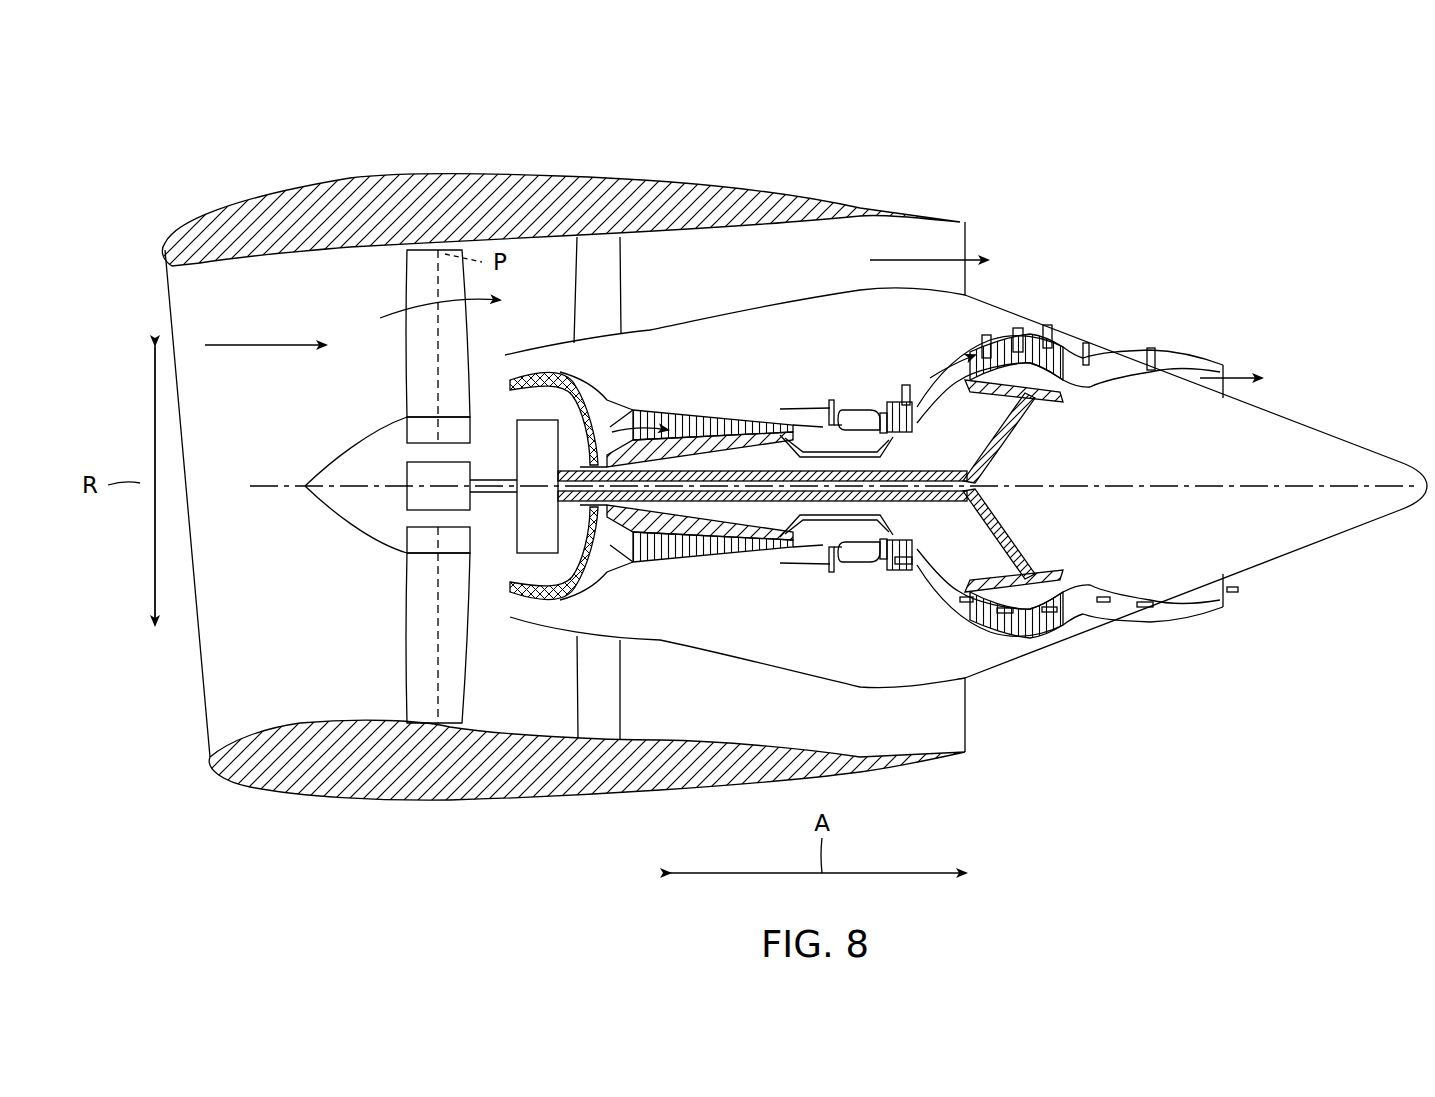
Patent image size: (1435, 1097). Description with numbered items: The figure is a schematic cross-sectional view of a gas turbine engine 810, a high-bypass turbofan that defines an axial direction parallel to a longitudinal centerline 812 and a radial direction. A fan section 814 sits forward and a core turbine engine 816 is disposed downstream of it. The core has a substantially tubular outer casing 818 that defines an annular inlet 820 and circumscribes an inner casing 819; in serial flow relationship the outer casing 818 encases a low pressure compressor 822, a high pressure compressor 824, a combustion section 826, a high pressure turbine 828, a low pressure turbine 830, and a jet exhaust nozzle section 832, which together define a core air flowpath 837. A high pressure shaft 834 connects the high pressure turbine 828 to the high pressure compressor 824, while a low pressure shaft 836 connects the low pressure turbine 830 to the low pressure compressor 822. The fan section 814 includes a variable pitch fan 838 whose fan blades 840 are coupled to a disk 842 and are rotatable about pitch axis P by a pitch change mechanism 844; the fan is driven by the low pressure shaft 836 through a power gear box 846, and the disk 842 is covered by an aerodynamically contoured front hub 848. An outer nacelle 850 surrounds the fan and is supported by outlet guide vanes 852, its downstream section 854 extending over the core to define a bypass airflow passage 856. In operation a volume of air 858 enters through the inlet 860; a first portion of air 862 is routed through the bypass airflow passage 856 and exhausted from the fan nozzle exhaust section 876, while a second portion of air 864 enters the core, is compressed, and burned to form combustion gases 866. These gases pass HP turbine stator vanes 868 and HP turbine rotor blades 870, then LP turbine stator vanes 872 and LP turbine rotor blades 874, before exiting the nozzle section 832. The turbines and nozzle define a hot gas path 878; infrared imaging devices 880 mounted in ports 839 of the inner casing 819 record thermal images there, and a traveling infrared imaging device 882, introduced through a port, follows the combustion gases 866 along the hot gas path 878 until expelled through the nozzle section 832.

The gas turbine engine 810 is at (1178, 122).
The longitudinal centerline 812 is at (1225, 486).
The fan section 814 is at (335, 290).
The core turbine engine 816 is at (802, 352).
The outer casing 818 is at (803, 665).
The inner casing 819 is at (713, 410).
The annular inlet 820 is at (562, 582).
The low pressure compressor 822 is at (510, 605).
The high pressure compressor 824 is at (655, 558).
The combustion section 826 is at (850, 556).
The high pressure turbine 828 is at (920, 568).
The low pressure turbine 830 is at (1042, 625).
The jet exhaust nozzle section 832 is at (1122, 614).
The high pressure shaft 834 is at (900, 452).
The low pressure shaft 836 is at (937, 470).
The core air flowpath 837 is at (593, 575).
The variable pitch fan 838 is at (355, 540).
The ports 839 is at (1048, 330).
The fan blades 840 is at (407, 660).
The disk 842 is at (407, 428).
The pitch change mechanism 844 is at (407, 480).
The power gear box 846 is at (517, 450).
The front hub 848 is at (330, 508).
The outer nacelle 850 is at (455, 800).
The outlet guide vanes 852 is at (615, 278).
The downstream section 854 is at (835, 195).
The bypass airflow passage 856 is at (894, 258).
The volume of air 858 is at (268, 345).
The inlet 860 is at (205, 680).
The first portion of air 862 is at (400, 310).
The second portion of air 864 is at (508, 375).
The combustion gases 866 is at (898, 402).
The HP turbine stator vanes 868 is at (872, 562).
The HP turbine rotor blades 870 is at (913, 535).
The LP turbine stator vanes 872 is at (972, 625).
The LP turbine rotor blades 874 is at (1060, 642).
The fan nozzle exhaust section 876 is at (965, 250).
The hot gas path 878 is at (945, 366).
The infrared imaging devices 880 is at (985, 333).
The infrared imaging device 882 is at (1105, 595).